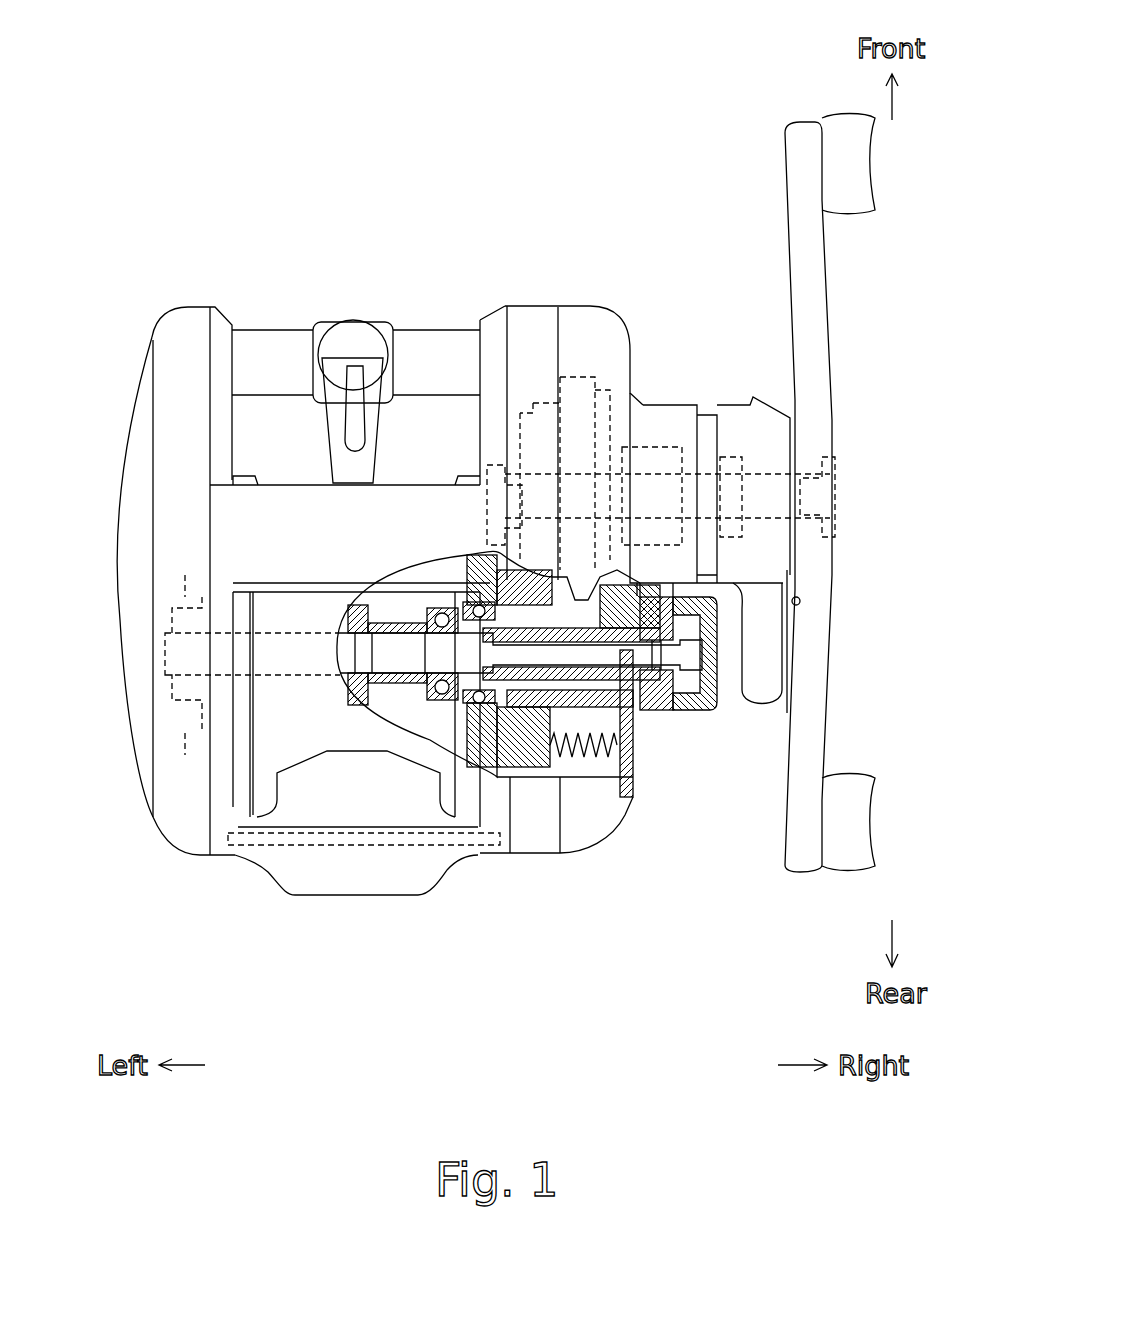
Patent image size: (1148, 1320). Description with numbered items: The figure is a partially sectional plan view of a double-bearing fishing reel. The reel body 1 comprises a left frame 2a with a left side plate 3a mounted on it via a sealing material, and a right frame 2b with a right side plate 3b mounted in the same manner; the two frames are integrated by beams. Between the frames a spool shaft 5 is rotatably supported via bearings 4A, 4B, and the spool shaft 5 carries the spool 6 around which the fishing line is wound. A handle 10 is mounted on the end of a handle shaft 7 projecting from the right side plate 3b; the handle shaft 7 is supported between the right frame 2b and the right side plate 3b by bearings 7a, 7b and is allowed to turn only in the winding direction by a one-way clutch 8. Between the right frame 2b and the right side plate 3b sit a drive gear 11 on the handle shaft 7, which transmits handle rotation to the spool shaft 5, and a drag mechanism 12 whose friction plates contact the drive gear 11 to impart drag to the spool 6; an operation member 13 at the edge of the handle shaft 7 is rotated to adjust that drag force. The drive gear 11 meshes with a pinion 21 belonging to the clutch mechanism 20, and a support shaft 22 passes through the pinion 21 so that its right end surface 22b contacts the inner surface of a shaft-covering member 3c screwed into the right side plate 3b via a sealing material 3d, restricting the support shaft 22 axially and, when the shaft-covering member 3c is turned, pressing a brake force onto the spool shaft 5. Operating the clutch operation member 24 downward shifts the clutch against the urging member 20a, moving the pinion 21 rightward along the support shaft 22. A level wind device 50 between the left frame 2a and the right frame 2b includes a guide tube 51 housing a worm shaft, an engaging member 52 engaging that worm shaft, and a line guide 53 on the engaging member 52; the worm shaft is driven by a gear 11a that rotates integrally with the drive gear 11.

The reel body 1 is at (678, 138).
The left frame 2a is at (224, 306).
The right frame 2b is at (492, 306).
The left side plate 3a is at (138, 395).
The right side plate 3b is at (620, 322).
The shaft-covering member 3c is at (693, 708).
The sealing material 3d is at (653, 702).
The bearing 4A is at (178, 700).
The bearing 4B is at (425, 705).
The spool shaft 5 is at (392, 638).
The spool 6 is at (321, 770).
The handle shaft 7 is at (667, 470).
The bearing 7a is at (487, 467).
The bearing 7b is at (728, 455).
The one-way clutch 8 is at (655, 445).
The handle 10 is at (818, 256).
The drive gear 11 is at (578, 378).
The gear 11a is at (540, 405).
The drag mechanism 12 is at (612, 390).
The operation member 13 is at (765, 697).
The clutch mechanism 20 is at (546, 792).
The urging member 20a is at (565, 758).
The pinion 21 is at (590, 687).
The support shaft 22 is at (640, 692).
The right end surface 22b is at (708, 655).
The clutch operation member 24 is at (337, 897).
The level wind device 50 is at (291, 292).
The guide tube 51 is at (440, 309).
The engaging member 52 is at (334, 320).
The line guide 53 is at (372, 366).